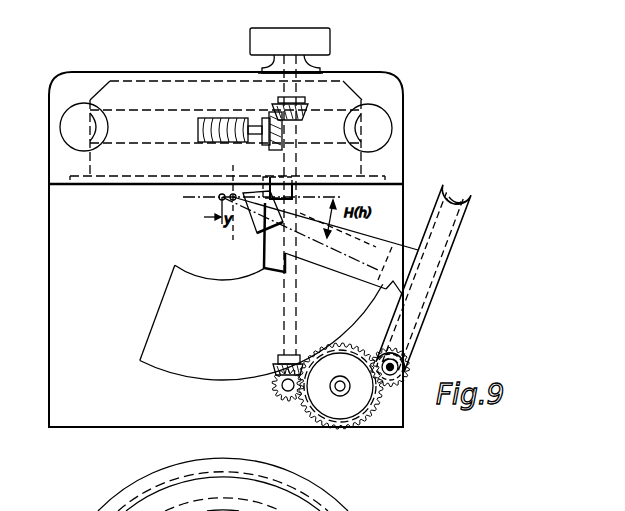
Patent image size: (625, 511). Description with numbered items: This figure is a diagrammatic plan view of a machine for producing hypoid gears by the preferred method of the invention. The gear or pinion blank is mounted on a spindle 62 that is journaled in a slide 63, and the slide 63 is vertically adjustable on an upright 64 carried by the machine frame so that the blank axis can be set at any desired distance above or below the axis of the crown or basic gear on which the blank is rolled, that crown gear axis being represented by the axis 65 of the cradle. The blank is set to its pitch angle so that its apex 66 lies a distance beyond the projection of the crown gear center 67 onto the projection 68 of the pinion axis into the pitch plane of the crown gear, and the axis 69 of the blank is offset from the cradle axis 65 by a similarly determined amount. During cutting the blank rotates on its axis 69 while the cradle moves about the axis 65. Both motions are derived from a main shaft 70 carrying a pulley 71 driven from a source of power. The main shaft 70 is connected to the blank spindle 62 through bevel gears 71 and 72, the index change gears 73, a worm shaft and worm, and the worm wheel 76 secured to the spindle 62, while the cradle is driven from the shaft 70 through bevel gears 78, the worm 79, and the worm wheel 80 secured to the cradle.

The spindle 62 is at (262, 237).
The slide 63 is at (372, 243).
The upright 64 is at (192, 366).
The axis of the cradle 65 is at (234, 168).
The apex 66 is at (220, 199).
The crown gear center 67 is at (220, 193).
The projection of the pinion axis 68 is at (330, 202).
The axis of the blank 69 is at (310, 236).
The main shaft 70 is at (283, 318).
The pulley 71 is at (305, 48).
The bevel gear 72 is at (283, 394).
The index change gears 73 is at (352, 425).
The worm wheel 76 is at (452, 208).
The bevel gears 78 is at (300, 110).
The worm 79 is at (220, 117).
The worm wheel 80 is at (88, 138).